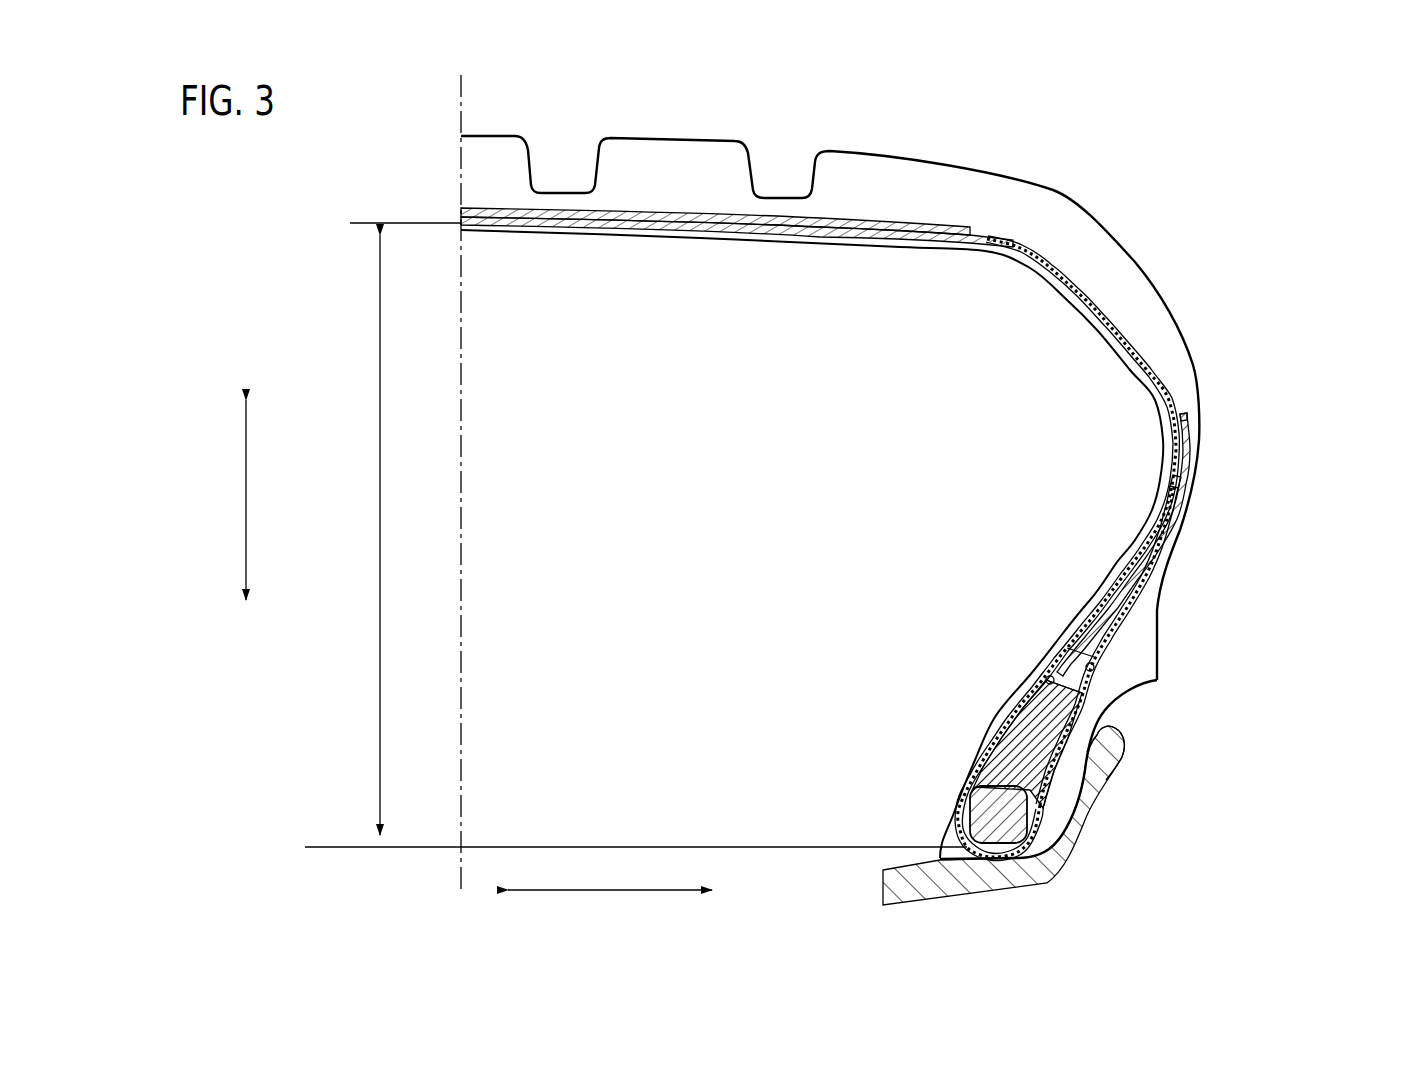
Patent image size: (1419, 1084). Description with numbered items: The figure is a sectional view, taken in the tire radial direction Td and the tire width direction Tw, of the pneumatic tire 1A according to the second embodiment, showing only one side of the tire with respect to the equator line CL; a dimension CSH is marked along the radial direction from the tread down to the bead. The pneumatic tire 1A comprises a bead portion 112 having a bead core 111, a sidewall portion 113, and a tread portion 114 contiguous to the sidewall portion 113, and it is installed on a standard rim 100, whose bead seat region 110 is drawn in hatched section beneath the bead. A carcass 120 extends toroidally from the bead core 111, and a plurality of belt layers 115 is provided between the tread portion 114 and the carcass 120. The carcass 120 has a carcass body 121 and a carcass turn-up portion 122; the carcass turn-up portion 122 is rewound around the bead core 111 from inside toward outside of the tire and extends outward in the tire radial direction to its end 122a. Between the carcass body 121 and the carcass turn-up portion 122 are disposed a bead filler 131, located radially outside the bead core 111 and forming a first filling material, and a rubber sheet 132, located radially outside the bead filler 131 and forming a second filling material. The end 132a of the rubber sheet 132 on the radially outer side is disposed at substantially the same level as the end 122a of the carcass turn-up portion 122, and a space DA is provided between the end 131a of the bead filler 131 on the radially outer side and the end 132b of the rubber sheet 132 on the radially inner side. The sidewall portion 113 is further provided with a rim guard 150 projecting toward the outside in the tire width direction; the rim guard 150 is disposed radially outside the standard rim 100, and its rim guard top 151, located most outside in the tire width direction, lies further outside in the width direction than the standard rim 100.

The pneumatic tire 1A is at (899, 465).
The standard rim 100 is at (1036, 824).
The rim bead seat 110 is at (1085, 801).
The bead core 111 is at (976, 820).
The bead portion 112 is at (1075, 750).
The sidewall portion 113 is at (1200, 378).
The tread portion 114 is at (846, 167).
The belt layers 115 is at (1023, 229).
The carcass 120 is at (1146, 548).
The carcass body 121 is at (1120, 326).
The carcass turn-up portion 122 is at (1169, 626).
The end of carcass turn-up portion 122a is at (1180, 487).
The bead filler 131 is at (983, 728).
The end of bead filler 131a is at (1046, 679).
The rubber sheet 132 is at (1178, 548).
The end of rubber sheet 132a is at (1176, 478).
The end of rubber sheet 132b is at (1094, 666).
The rim guard 150 is at (1102, 730).
The rim guard top 151 is at (1155, 681).
The space DA is at (1077, 657).
The equator line CL is at (461, 540).
The cross section height CSH is at (346, 535).
The tire radial direction Td is at (226, 493).
The tire width direction Tw is at (604, 910).